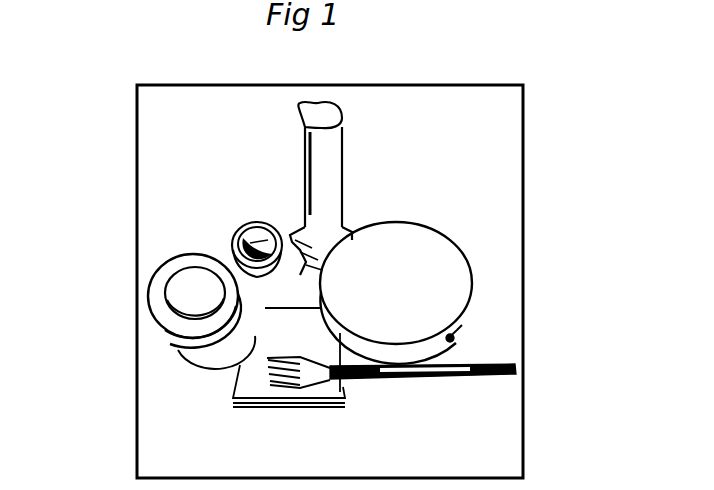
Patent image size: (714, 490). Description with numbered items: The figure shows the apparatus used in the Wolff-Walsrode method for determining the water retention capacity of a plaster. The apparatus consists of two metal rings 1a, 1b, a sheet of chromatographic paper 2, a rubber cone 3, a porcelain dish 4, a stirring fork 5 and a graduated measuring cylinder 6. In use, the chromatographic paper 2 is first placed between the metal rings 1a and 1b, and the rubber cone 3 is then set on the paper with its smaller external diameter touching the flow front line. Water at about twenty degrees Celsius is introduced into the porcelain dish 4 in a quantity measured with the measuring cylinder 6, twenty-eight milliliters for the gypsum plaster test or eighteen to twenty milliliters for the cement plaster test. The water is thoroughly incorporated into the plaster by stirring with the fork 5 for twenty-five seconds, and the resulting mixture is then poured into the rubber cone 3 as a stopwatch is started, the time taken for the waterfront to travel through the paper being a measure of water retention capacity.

The metal ring 1a is at (158, 293).
The metal ring 1b is at (193, 352).
The chromatographic paper 2 is at (343, 397).
The rubber cone 3 is at (238, 235).
The porcelain dish 4 is at (410, 262).
The stirring fork 5 is at (460, 372).
The measuring cylinder 6 is at (325, 163).